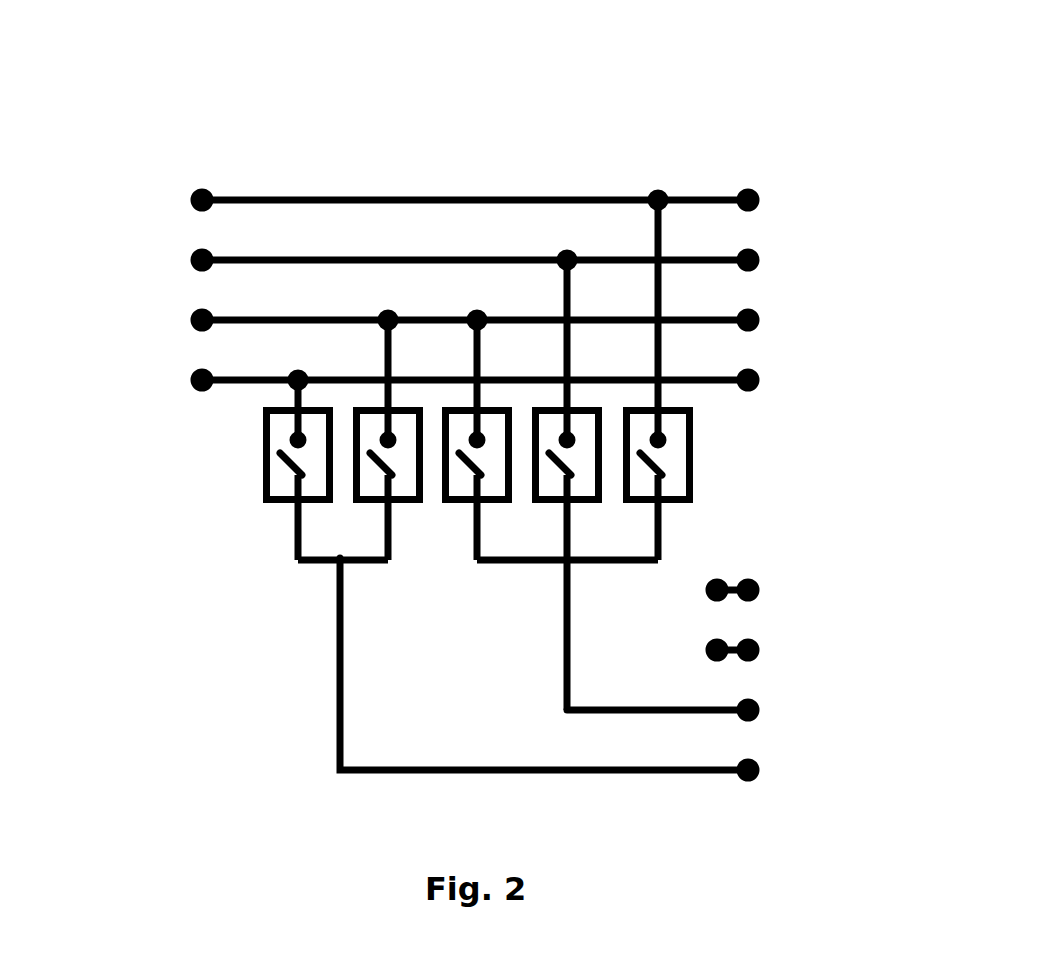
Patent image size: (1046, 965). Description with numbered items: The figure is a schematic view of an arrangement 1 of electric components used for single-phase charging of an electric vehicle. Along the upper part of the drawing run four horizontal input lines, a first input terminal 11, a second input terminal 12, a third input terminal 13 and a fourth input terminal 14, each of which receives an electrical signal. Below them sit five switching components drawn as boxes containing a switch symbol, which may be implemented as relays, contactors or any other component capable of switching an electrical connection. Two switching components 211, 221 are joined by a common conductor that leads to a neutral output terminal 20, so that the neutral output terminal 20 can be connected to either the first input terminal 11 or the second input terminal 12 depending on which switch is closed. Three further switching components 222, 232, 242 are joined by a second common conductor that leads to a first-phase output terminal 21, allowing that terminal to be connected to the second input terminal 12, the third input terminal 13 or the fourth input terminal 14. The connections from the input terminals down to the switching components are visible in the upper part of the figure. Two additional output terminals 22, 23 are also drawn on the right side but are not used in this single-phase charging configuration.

The arrangement 1 is at (703, 103).
The first input terminal 11 is at (202, 380).
The second input terminal 12 is at (202, 320).
The third input terminal 13 is at (202, 260).
The fourth input terminal 14 is at (202, 200).
The neutral output terminal 20 is at (748, 770).
The first-phase output terminal 21 is at (748, 710).
The output terminal 22 is at (748, 650).
The output terminal 23 is at (748, 590).
The switching component 211 is at (283, 503).
The switching component 221 is at (372, 503).
The switching component 222 is at (462, 503).
The switching component 232 is at (585, 503).
The switching component 242 is at (692, 418).